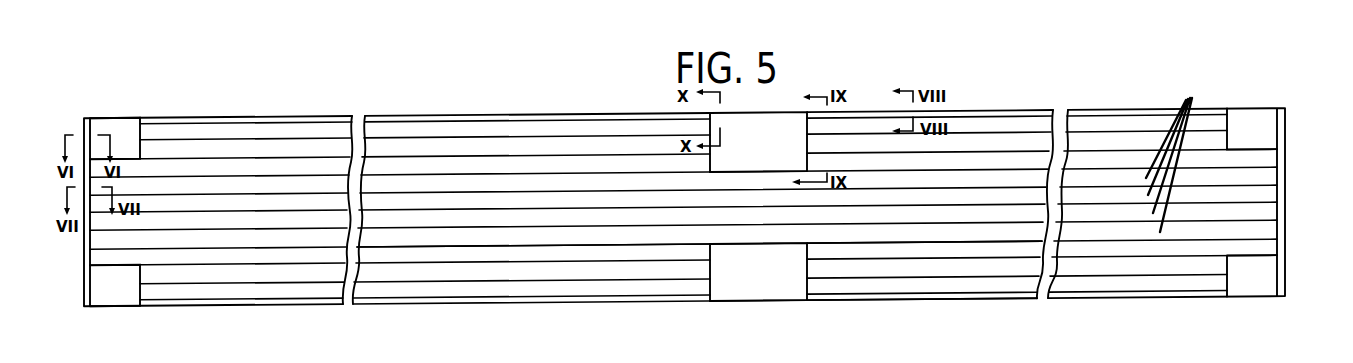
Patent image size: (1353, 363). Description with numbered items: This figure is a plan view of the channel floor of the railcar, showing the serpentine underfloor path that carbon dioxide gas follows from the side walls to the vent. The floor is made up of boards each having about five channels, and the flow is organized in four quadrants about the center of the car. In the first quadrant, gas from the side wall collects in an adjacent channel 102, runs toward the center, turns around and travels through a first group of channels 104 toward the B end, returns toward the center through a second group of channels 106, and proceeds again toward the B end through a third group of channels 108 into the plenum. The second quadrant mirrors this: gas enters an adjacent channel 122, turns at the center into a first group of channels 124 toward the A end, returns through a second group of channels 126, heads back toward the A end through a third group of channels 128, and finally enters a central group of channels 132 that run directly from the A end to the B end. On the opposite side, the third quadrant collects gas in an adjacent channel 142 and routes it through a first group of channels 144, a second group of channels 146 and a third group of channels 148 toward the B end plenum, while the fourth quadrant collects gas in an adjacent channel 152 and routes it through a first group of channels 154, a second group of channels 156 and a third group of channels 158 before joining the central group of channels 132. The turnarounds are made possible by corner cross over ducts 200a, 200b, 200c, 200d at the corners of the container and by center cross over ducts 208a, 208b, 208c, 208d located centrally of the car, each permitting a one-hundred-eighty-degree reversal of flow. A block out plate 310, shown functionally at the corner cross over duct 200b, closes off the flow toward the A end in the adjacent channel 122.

The adjacent channel 102 is at (952, 110).
The first group of channels 104 is at (978, 127).
The second group of channels 106 is at (1018, 147).
The third group of channels 108 is at (1082, 160).
The adjacent channel 122 is at (482, 112).
The first group of channels 124 is at (492, 128).
The second group of channels 126 is at (513, 147).
The third group of channels 128 is at (535, 160).
The central group of channels 132 is at (1184, 152).
The adjacent channel 142 is at (937, 298).
The first group of channels 144 is at (993, 285).
The second group of channels 146 is at (1058, 268).
The third group of channels 148 is at (1093, 248).
The adjacent channel 152 is at (462, 297).
The first group of channels 154 is at (493, 287).
The second group of channels 156 is at (523, 270).
The third group of channels 158 is at (542, 252).
The corner cross over duct 200a is at (1260, 110).
The corner cross over duct 200b is at (117, 127).
The corner cross over duct 200c is at (1257, 298).
The corner cross over duct 200d is at (113, 288).
The center cross over duct 208a is at (788, 118).
The center cross over duct 208b is at (748, 122).
The center cross over duct 208c is at (793, 295).
The center cross over duct 208d is at (724, 290).
The block out plate 310 is at (145, 122).